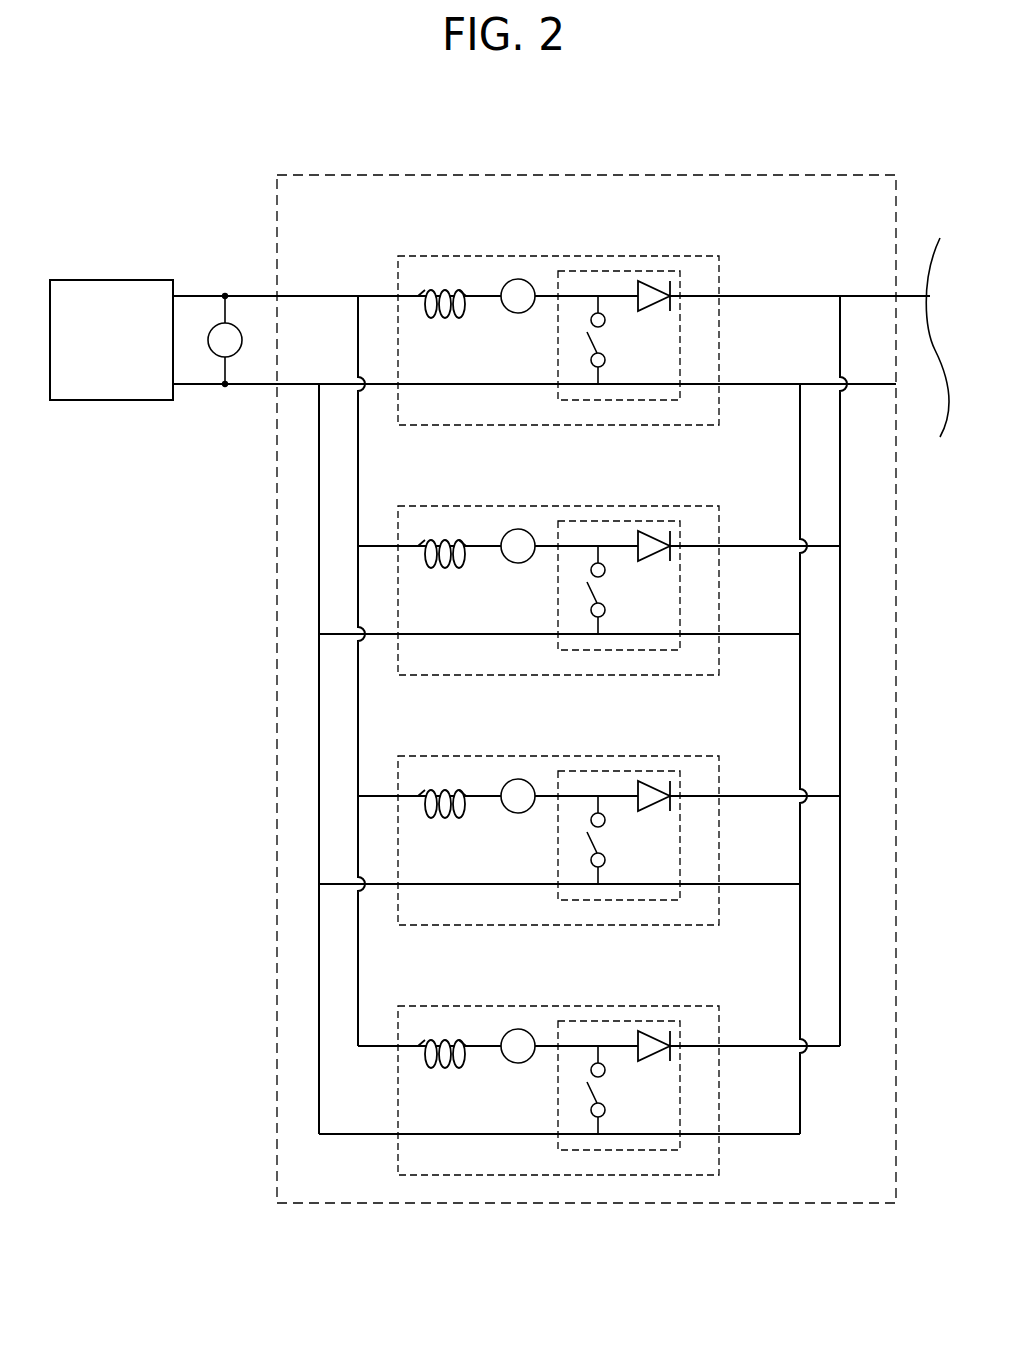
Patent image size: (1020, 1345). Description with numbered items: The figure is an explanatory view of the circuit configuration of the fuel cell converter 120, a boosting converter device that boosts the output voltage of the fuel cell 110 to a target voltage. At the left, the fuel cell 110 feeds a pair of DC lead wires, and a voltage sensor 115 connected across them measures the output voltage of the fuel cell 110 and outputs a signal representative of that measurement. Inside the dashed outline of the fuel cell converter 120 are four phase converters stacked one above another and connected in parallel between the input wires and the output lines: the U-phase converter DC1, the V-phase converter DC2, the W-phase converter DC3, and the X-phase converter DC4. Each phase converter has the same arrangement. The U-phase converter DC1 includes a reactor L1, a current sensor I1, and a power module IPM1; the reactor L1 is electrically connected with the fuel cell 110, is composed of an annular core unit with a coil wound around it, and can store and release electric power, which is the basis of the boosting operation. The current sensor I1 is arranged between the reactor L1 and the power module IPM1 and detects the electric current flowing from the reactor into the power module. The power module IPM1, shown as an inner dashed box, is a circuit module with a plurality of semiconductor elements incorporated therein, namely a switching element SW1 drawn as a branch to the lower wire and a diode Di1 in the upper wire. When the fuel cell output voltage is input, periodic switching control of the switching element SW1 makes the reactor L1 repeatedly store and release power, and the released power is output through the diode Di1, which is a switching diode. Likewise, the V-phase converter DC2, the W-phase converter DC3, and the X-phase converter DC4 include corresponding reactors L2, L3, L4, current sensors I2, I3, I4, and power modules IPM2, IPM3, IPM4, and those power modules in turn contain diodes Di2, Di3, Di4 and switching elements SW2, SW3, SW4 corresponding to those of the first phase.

The fuel cell 110 is at (112, 280).
The voltage sensor 115 is at (242, 352).
The fuel cell converter 120 is at (343, 175).
The reactor L1 is at (438, 287).
The reactor L2 is at (438, 537).
The reactor L3 is at (438, 787).
The reactor L4 is at (438, 1037).
The current sensor I1 is at (518, 279).
The current sensor I2 is at (518, 529).
The current sensor I3 is at (518, 779).
The current sensor I4 is at (518, 1029).
The diode Di1 is at (658, 290).
The diode Di2 is at (658, 540).
The diode Di3 is at (658, 790).
The diode Di4 is at (658, 1040).
The switching element SW1 is at (585, 343).
The switching element SW2 is at (585, 593).
The switching element SW3 is at (585, 843).
The switching element SW4 is at (585, 1093).
The power module IPM1 is at (684, 290).
The power module IPM2 is at (684, 540).
The power module IPM3 is at (684, 790).
The power module IPM4 is at (684, 1040).
The U-phase converter DC1 is at (722, 282).
The V-phase converter DC2 is at (722, 532).
The W-phase converter DC3 is at (722, 782).
The X-phase converter DC4 is at (722, 1032).